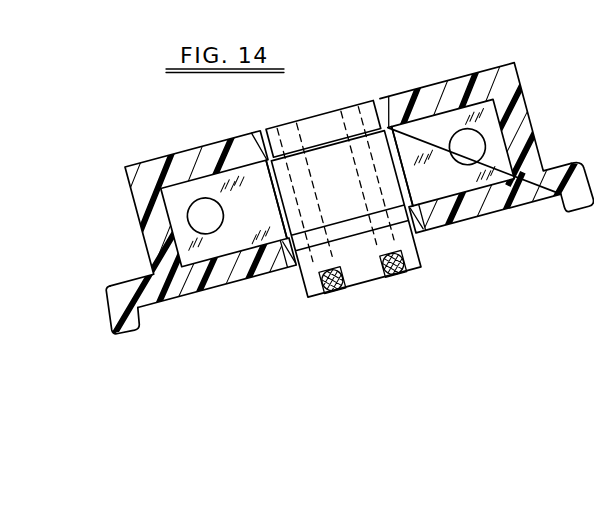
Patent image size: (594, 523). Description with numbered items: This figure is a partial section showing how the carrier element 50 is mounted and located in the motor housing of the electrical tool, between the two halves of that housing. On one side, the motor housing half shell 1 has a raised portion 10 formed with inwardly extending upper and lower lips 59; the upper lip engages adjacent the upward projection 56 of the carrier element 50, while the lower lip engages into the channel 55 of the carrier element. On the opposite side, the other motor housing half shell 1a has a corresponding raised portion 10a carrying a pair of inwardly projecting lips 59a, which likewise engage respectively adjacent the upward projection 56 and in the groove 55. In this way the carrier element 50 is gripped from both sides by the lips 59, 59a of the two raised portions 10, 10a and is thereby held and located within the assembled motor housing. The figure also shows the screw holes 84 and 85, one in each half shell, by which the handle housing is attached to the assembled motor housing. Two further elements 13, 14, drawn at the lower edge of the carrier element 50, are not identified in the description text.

The motor housing half shell 1 is at (128, 288).
The motor housing half shell 1a is at (555, 165).
The raised portion 10 is at (200, 147).
The raised portion 10a is at (483, 63).
The screw 13 is at (335, 293).
The screw 14 is at (403, 275).
The carrier element 50 is at (335, 160).
The channel 55 is at (308, 248).
The upward projection 56 is at (283, 140).
The upper and lower lips 59 is at (258, 136).
The inwardly projecting lips 59a is at (390, 105).
The screw hole 84 is at (190, 210).
The screw hole 85 is at (470, 140).